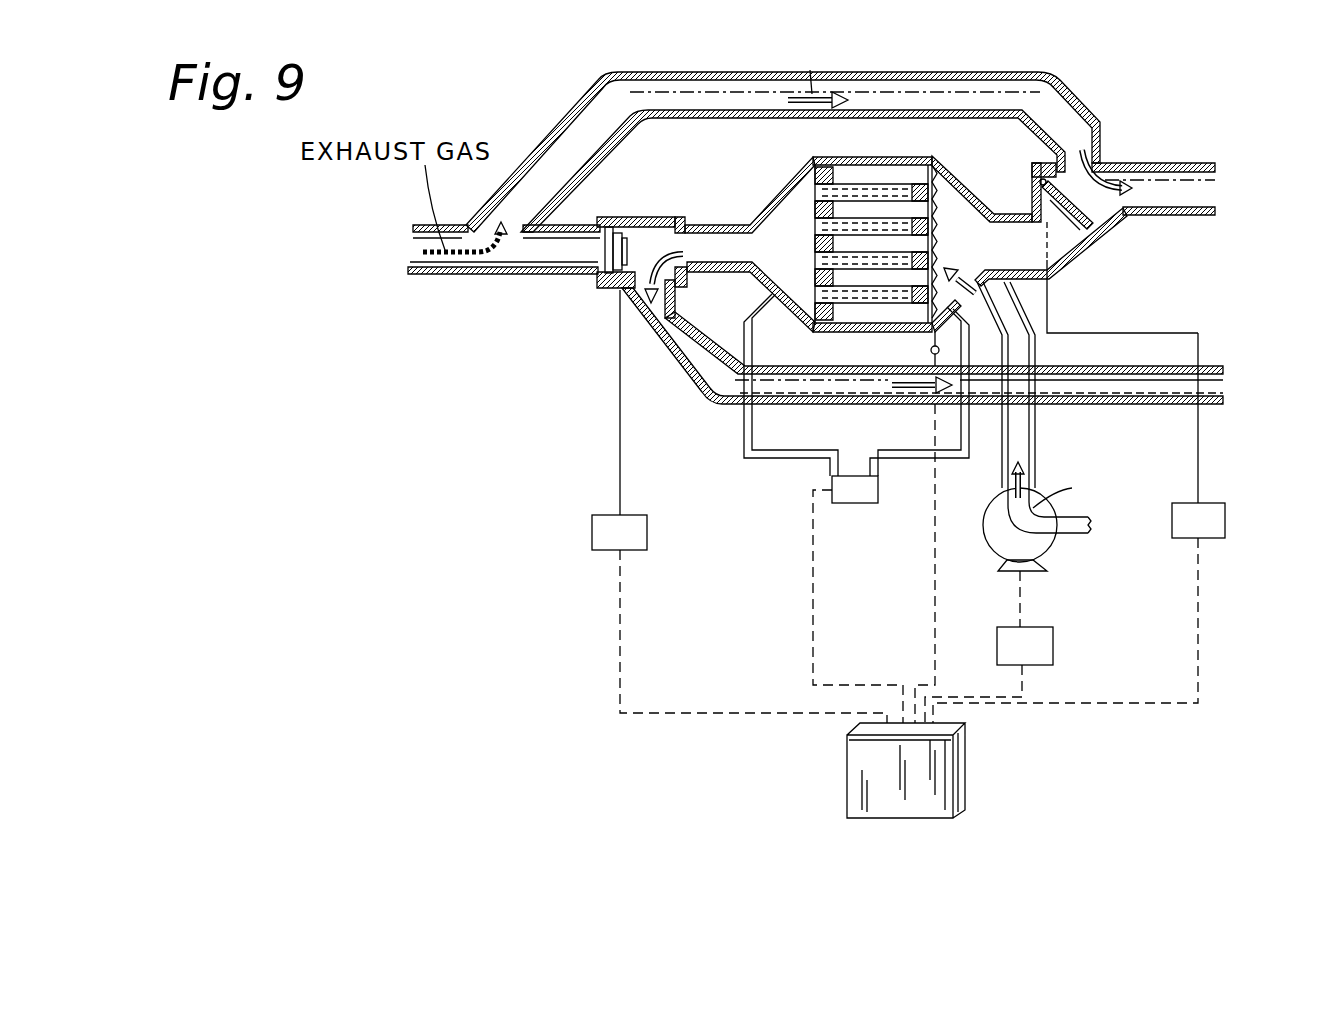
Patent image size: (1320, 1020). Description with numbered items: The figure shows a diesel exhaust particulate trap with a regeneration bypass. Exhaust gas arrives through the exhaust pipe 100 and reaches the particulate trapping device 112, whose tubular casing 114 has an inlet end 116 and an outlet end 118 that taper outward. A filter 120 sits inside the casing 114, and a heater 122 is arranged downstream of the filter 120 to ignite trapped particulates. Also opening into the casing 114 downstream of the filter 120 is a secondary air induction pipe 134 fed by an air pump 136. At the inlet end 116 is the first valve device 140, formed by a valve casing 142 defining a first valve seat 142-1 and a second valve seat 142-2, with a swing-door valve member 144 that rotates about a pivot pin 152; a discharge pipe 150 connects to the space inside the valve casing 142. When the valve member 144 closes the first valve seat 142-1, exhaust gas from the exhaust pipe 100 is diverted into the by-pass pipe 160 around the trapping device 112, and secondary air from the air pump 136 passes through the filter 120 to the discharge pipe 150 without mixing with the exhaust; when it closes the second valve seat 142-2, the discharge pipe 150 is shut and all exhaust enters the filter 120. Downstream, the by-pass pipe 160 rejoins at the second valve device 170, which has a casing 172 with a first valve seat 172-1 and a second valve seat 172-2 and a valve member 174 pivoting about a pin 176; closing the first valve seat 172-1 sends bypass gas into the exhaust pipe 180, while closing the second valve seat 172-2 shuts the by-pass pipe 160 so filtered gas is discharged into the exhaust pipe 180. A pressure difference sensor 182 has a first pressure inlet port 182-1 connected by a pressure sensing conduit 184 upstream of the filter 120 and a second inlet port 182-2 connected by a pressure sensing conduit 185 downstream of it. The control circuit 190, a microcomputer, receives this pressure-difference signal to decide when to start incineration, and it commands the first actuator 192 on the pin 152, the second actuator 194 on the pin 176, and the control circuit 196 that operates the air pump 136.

The exhaust pipe 100 is at (507, 278).
The particulate trapping device 112 is at (905, 189).
The tubular casing 114 is at (870, 157).
The inlet end 116 is at (801, 178).
The outlet end 118 is at (963, 200).
The filter 120 is at (908, 170).
The heater 122 is at (934, 235).
The secondary air induction pipe 134 is at (1040, 438).
The air pump 136 is at (1047, 537).
The first valve device 140 is at (637, 278).
The valve casing 142 is at (655, 215).
The first valve seat 142-1 is at (600, 250).
The second valve seat 142-2 is at (740, 297).
The valve member 144 is at (597, 276).
The discharge pipe 150 is at (917, 377).
The pivot pin 152 is at (612, 300).
The by-pass pipe 160 is at (628, 100).
The second valve device 170 is at (1133, 231).
The casing 172 is at (1100, 233).
The first valve seat 172-1 is at (1062, 228).
The second valve seat 172-2 is at (1090, 158).
The valve member 174 is at (1078, 228).
The pin 176 is at (1036, 222).
The exhaust pipe 180 is at (1215, 162).
The pressure difference sensor 182 is at (856, 508).
The first pressure inlet port 182-1 is at (833, 470).
The second inlet port 182-2 is at (878, 470).
The pressure sensing conduit 184 is at (754, 434).
The pressure sensing conduit 185 is at (962, 435).
The control circuit 190 is at (967, 782).
The first actuator 192 is at (592, 534).
The second actuator 194 is at (1217, 520).
The control circuit 196 is at (1055, 647).